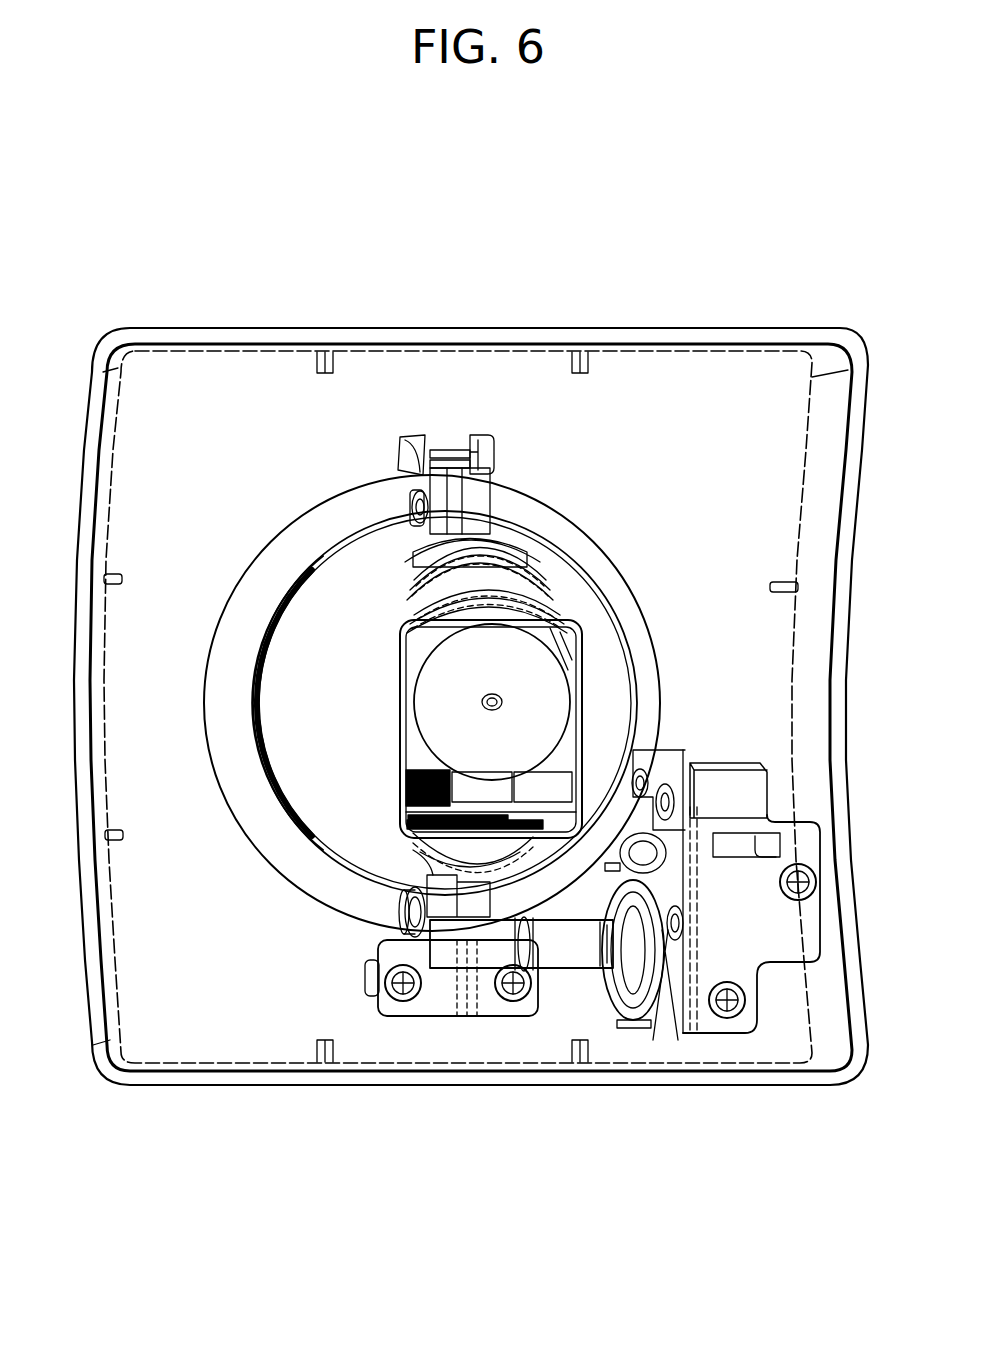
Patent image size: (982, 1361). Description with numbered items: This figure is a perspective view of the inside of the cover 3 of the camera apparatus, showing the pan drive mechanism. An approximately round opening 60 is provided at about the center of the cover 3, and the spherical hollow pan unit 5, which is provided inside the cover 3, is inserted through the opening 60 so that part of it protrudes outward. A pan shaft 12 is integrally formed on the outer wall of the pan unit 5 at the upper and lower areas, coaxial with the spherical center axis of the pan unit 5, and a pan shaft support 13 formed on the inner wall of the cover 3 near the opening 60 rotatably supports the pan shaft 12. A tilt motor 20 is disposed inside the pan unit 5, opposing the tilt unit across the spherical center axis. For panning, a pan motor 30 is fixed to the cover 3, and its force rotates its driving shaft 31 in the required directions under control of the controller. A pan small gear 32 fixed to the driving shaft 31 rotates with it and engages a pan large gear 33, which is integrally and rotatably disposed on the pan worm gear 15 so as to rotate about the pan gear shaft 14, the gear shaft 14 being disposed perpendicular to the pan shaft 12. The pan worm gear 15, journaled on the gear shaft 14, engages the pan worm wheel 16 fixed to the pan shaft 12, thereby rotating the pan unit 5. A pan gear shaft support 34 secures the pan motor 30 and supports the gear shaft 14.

The cover 3 is at (268, 372).
The pan unit 5 is at (597, 607).
The pan shaft 12 is at (477, 433).
The pan shaft support 13 is at (418, 437).
The pan gear shaft 14 is at (438, 1013).
The pan worm gear 15 is at (545, 953).
The pan worm wheel 16 is at (400, 942).
The tilt motor 20 is at (433, 677).
The pan motor 30 is at (664, 1005).
The driving shaft 31 is at (655, 770).
The pan small gear 32 is at (652, 1005).
The pan large gear 33 is at (638, 1013).
The pan gear shaft support 34 is at (760, 950).
The opening 60 is at (262, 642).